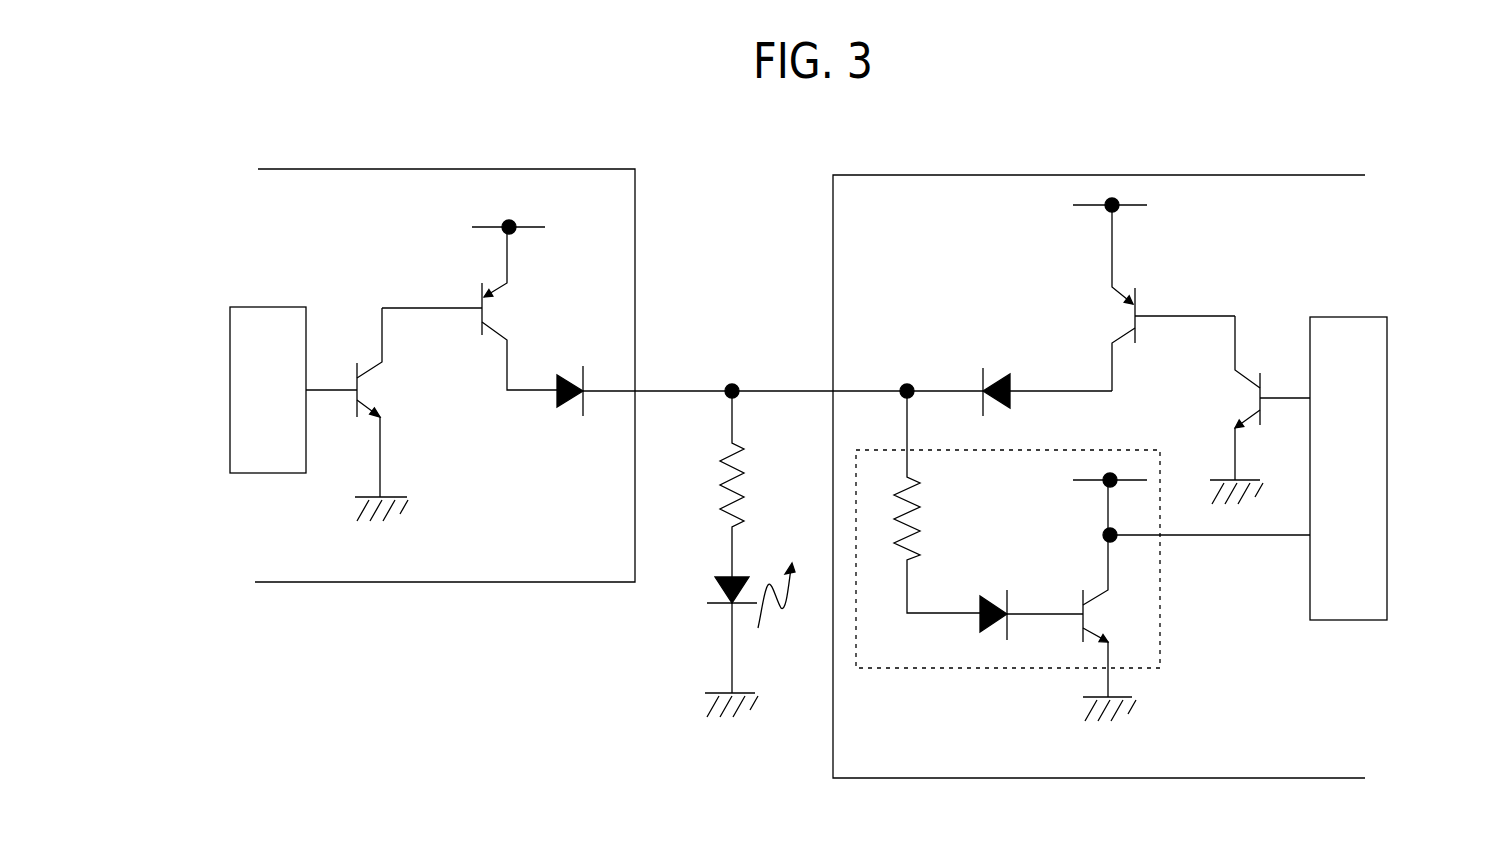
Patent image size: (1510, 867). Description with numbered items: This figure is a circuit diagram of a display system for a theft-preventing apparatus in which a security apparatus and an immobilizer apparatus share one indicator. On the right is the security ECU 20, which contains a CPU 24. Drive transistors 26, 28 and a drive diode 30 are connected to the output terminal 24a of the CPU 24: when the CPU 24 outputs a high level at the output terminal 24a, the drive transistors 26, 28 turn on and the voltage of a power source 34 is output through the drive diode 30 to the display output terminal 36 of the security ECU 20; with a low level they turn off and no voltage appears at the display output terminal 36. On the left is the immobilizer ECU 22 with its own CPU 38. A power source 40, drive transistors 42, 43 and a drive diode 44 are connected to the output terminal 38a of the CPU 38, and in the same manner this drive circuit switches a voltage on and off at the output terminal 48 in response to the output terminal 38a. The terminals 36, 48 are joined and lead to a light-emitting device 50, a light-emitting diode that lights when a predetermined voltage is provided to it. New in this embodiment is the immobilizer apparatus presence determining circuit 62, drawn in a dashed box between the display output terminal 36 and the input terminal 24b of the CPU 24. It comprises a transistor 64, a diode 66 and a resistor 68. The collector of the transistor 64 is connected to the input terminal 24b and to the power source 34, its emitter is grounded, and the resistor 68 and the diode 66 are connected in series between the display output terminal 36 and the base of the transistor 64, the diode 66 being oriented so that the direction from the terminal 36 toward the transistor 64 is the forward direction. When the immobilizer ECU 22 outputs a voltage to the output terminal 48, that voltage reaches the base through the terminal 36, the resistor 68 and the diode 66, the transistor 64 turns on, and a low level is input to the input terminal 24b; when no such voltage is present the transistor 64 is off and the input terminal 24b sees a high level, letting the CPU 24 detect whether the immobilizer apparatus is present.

The security ECU 20 is at (1035, 775).
The immobilizer ECU 22 is at (363, 563).
The CPU 24 is at (1362, 610).
The output terminal 24a is at (1308, 390).
The input terminal 24b is at (1300, 540).
The drive transistor 26 is at (1263, 402).
The drive transistor 28 is at (1146, 315).
The drive diode 30 is at (973, 388).
The power source 34 is at (1102, 200).
The display output terminal 36 is at (825, 390).
The CPU 38 is at (238, 440).
The output terminal 38a is at (310, 390).
The power source 40 is at (517, 232).
The drive transistor 42 is at (357, 405).
The drive transistor 43 is at (480, 312).
The drive diode 44 is at (572, 405).
The output terminal 48 is at (638, 388).
The light-emitting device 50 is at (705, 603).
The immobilizer apparatus presence determining circuit 62 is at (887, 665).
The transistor 64 is at (1073, 630).
The diode 66 is at (990, 635).
The resistor 68 is at (925, 513).